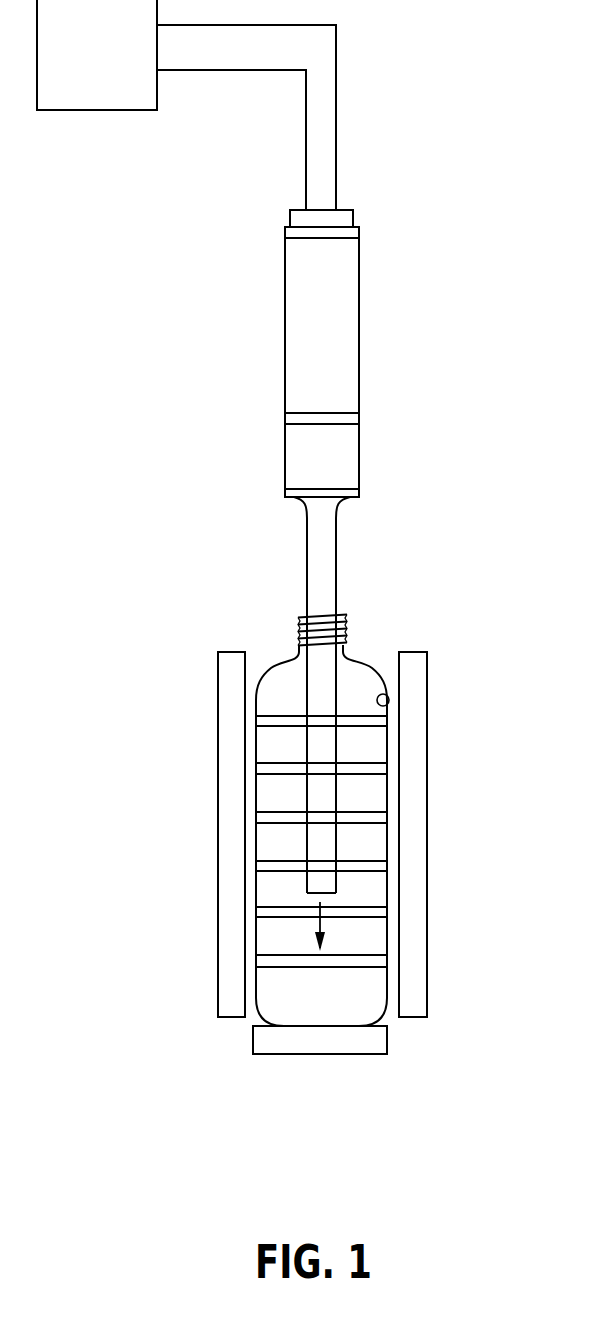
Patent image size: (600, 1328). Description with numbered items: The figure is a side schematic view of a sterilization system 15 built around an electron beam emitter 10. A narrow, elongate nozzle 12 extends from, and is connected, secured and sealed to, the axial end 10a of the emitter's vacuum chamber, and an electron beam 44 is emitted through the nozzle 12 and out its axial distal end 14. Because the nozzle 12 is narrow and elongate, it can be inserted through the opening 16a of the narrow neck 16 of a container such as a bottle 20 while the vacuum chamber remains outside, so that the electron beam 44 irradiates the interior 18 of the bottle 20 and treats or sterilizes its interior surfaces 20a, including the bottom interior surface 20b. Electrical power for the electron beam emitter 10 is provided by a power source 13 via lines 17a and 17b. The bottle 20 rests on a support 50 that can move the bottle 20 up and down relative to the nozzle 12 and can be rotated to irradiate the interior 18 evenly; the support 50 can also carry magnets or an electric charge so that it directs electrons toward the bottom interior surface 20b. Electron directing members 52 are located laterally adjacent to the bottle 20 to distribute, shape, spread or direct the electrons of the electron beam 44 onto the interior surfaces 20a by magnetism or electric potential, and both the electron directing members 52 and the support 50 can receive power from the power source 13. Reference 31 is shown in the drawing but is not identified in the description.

The power source 13 is at (114, 60).
The line 17a is at (306, 98).
The line 17b is at (337, 95).
The electron beam emitter 10 is at (360, 270).
The axial end 10a is at (340, 500).
The nozzle 12 is at (337, 547).
The axial distal end 14 is at (337, 893).
The opening 16a is at (336, 617).
The neck 16 is at (346, 630).
The bottle 20 is at (377, 790).
The interior surfaces 20a is at (390, 695).
The interior 18 is at (363, 843).
The electron beam 44 is at (322, 937).
The bottom interior surface 20b is at (292, 1025).
The support 50 is at (320, 1045).
The electron directing members 52 is at (222, 930).
The heating element 31 is at (418, 985).
The sterilization system 15 is at (527, 335).